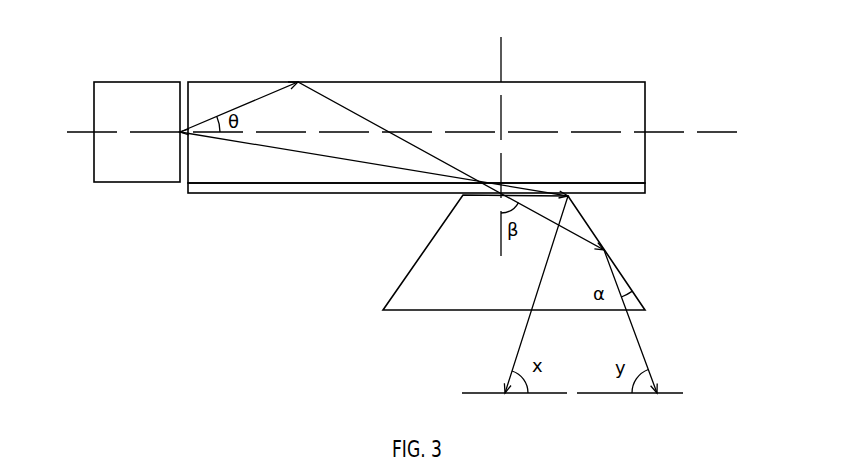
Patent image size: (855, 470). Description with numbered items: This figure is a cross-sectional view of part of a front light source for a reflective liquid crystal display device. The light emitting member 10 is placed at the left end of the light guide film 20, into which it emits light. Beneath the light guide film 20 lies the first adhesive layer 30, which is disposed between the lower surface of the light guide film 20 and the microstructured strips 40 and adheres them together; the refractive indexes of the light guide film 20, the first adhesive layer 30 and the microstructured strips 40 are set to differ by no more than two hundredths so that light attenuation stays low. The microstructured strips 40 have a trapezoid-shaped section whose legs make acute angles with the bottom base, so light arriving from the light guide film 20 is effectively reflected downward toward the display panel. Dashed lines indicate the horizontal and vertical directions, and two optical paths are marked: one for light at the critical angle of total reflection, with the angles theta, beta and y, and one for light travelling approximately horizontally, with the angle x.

The light emitting member 10 is at (140, 97).
The light guide film 20 is at (622, 98).
The first adhesive layer 30 is at (627, 187).
The microstructured strips 40 is at (622, 298).